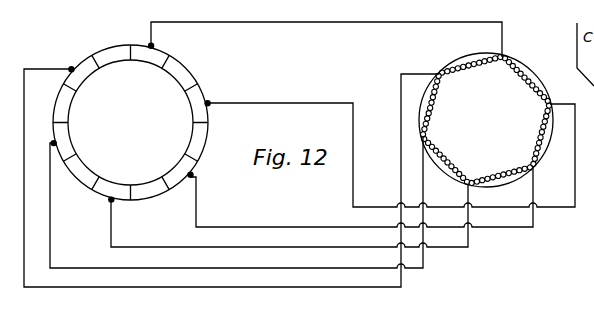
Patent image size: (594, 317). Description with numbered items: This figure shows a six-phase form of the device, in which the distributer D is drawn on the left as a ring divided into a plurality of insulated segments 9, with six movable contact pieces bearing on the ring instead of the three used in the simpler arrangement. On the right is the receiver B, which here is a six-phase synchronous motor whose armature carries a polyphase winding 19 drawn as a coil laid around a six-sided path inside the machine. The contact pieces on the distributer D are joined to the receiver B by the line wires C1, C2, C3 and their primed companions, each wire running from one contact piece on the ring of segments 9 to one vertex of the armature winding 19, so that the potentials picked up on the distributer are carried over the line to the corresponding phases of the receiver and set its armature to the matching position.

The armature winding phase 19 is at (518, 73).
The segments 9 is at (128, 132).
The distributer D is at (130, 122).
The receiver B is at (486, 120).
The line wire C1 is at (278, 187).
The line wire C2 is at (306, 128).
The line wire C3 is at (312, 178).